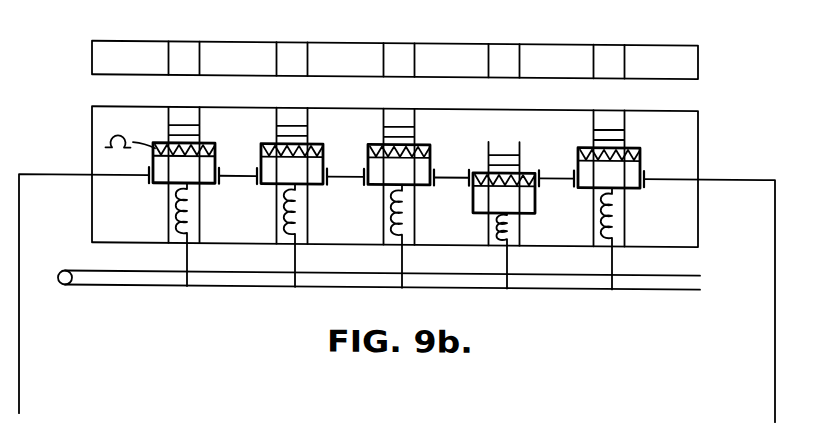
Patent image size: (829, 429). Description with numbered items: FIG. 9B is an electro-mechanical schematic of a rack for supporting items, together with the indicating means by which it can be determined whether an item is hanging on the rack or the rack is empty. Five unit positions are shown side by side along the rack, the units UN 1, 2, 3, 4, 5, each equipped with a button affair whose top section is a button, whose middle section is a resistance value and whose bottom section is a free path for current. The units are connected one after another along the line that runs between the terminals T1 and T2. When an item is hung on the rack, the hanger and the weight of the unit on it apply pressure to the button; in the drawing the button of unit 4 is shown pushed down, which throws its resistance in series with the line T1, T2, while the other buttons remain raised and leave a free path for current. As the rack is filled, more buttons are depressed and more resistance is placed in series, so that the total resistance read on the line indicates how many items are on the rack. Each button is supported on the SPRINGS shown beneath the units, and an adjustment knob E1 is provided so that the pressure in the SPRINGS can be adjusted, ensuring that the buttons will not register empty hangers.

The unit UN1 1 is at (158, 148).
The unit UN2 2 is at (292, 149).
The unit UN3 3 is at (399, 149).
The unit UN4 4 is at (504, 150).
The unit UN5 5 is at (609, 150).
The springs SPRINGS is at (178, 213).
The adjustment knob E1 is at (379, 290).
The line terminal T1 is at (84, 295).
The line terminal T2 is at (724, 301).